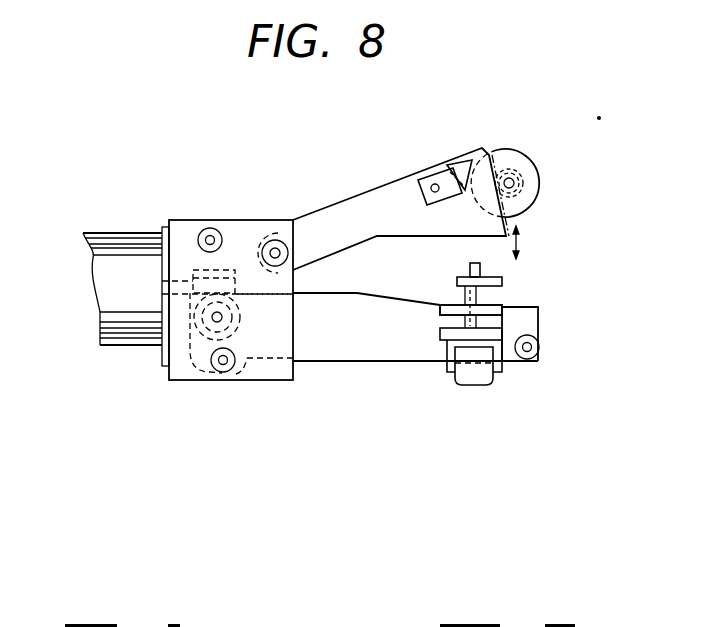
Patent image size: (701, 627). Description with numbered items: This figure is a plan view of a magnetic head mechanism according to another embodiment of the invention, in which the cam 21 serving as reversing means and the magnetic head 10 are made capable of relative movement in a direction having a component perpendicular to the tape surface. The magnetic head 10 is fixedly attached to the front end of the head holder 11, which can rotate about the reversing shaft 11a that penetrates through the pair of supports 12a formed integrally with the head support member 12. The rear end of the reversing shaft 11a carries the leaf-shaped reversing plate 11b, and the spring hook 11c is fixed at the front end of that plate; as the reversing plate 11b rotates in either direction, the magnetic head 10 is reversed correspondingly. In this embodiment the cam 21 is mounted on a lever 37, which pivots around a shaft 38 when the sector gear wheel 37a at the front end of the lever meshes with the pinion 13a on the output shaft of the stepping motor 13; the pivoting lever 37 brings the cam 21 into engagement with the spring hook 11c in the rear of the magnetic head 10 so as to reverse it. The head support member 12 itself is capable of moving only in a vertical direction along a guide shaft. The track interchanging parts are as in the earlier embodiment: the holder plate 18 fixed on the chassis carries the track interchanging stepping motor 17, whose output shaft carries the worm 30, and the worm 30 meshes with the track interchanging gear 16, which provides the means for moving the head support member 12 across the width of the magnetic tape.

The magnetic head 10 is at (474, 382).
The head holder 11 is at (498, 355).
The reversing shaft 11a is at (478, 299).
The reversing plate 11b is at (500, 279).
The spring hook 11c is at (470, 268).
The head support member 12 is at (350, 354).
The supports 12a is at (445, 305).
The stepping motor 13 is at (540, 190).
The pinion 13a is at (520, 176).
The track interchanging gear 16 is at (186, 352).
The track interchanging stepping motor 17 is at (102, 297).
The holder plate 18 is at (235, 228).
The cam 21 is at (455, 170).
The worm 30 is at (205, 270).
The lever 37 is at (380, 200).
The sector gear wheel 37a is at (486, 152).
The shaft 38 is at (274, 242).